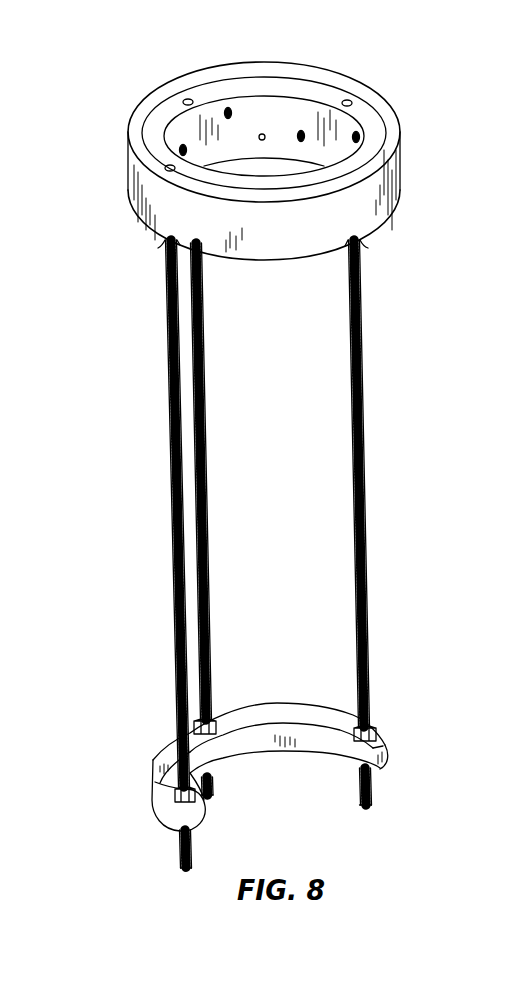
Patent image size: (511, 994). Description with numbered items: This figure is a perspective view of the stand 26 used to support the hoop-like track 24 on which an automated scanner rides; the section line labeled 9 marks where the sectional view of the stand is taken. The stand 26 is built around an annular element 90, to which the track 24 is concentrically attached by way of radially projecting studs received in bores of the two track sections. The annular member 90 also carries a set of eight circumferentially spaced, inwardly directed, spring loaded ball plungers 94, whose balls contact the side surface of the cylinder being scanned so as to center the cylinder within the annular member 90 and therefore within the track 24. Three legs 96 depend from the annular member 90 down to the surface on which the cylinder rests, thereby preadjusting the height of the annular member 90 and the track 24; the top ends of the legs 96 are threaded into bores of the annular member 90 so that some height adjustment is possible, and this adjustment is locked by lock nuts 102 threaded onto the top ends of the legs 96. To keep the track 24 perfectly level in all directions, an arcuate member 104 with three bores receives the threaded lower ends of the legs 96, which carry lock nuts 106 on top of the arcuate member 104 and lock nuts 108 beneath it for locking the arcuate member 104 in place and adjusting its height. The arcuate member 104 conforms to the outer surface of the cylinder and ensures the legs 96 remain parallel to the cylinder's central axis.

The section line for FIG. 9 is at (162, 197).
The track 24 is at (116, 165).
The stand 26 is at (392, 355).
The annular element 90 is at (330, 99).
The spring loaded ball plungers 94 is at (183, 150).
The legs 96 is at (205, 472).
The lock nuts 102 is at (360, 245).
The arcuate member 104 is at (288, 720).
The lock nuts 106 is at (214, 720).
The lock nuts 108 is at (213, 766).